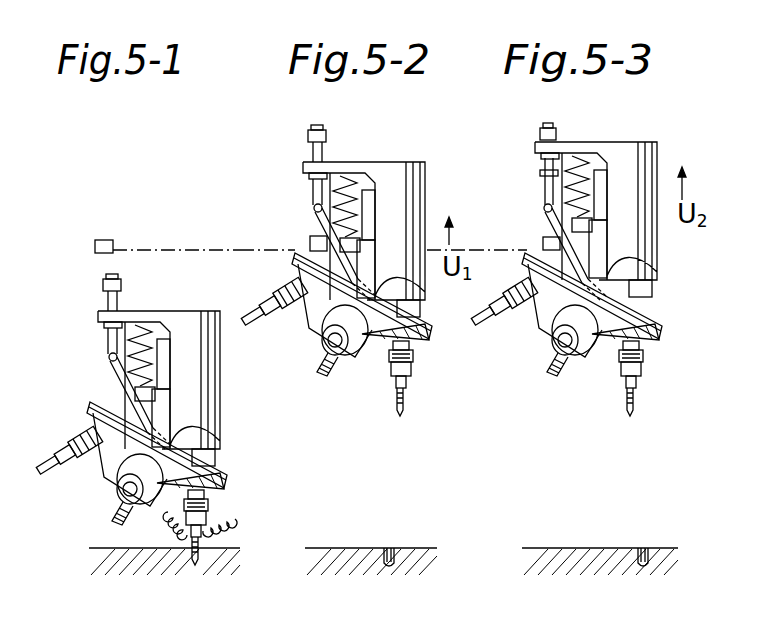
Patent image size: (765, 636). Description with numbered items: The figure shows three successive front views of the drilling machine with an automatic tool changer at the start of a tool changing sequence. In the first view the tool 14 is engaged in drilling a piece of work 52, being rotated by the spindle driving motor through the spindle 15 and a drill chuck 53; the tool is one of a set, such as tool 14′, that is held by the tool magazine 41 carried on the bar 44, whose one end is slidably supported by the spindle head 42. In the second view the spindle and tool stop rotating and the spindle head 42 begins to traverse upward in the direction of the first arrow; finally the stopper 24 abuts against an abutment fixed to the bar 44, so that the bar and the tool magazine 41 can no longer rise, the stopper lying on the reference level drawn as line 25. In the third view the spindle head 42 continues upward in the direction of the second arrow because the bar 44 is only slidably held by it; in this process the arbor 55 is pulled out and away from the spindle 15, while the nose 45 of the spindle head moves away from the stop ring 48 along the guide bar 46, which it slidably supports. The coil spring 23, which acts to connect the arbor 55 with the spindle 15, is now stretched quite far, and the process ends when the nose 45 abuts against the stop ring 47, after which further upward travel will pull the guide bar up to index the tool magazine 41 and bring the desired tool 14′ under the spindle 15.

In FIG. 5-1, the tool 14 is at (210, 511).
In FIG. 5-2, the tool 14 is at (405, 403).
In FIG. 5-3, the tool 14 is at (636, 403).
In FIG. 5-2, the tool 14′ is at (322, 373).
In FIG. 5-3, the tool 14′ is at (553, 372).
In FIG. 5-1, the spindle 15 is at (209, 456).
In FIG. 5-2, the spindle 15 is at (415, 308).
In FIG. 5-3, the spindle 15 is at (648, 291).
In FIG. 5-3, the coil spring 23 is at (583, 176).
In FIG. 5-1, the stopper 24 is at (95, 241).
In FIG. 5-2, the stopper 24 is at (313, 237).
In FIG. 5-3, the stopper 24 is at (543, 238).
In FIG. 5-2, the reference line 25 is at (310, 254).
In FIG. 5-3, the reference line 25 is at (527, 250).
In FIG. 5-2, the tool magazine 41 is at (296, 259).
In FIG. 5-3, the tool magazine 41 is at (652, 335).
In FIG. 5-2, the spindle head 42 is at (425, 186).
In FIG. 5-3, the spindle head 42 is at (660, 155).
In FIG. 5-2, the bar 44 is at (373, 288).
In FIG. 5-3, the bar 44 is at (613, 273).
In FIG. 5-3, the nose 45 is at (573, 143).
In FIG. 5-3, the guide bar 46 is at (545, 158).
In FIG. 5-3, the stop ring 47 is at (538, 134).
In FIG. 5-3, the stop ring 48 is at (541, 175).
In FIG. 5-1, the piece of work 52 is at (127, 552).
In FIG. 5-2, the piece of work 52 is at (323, 550).
In FIG. 5-3, the piece of work 52 is at (548, 550).
In FIG. 5-1, the drill chuck 53 is at (212, 508).
In FIG. 5-3, the arbor 55 is at (633, 328).